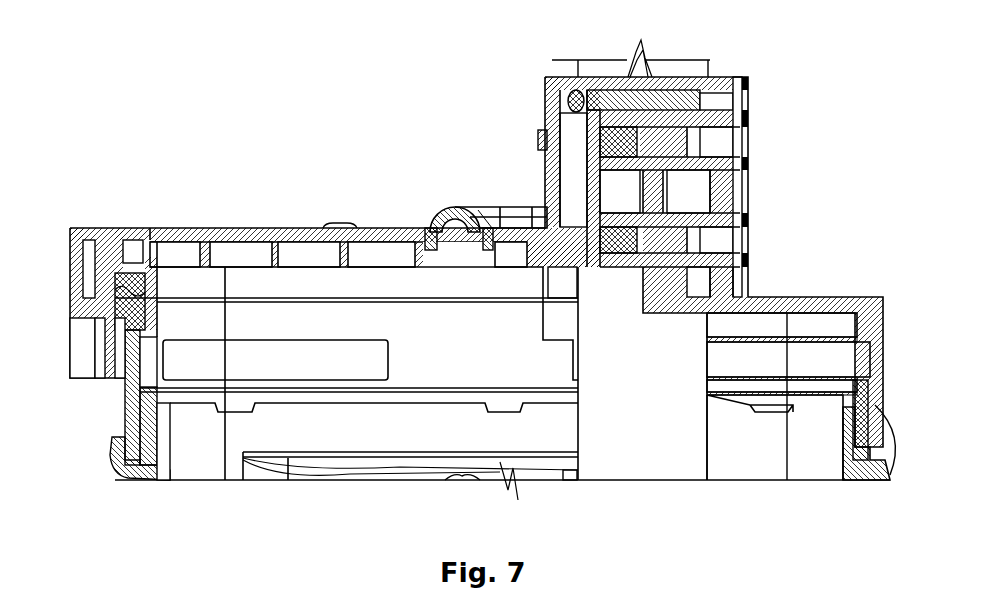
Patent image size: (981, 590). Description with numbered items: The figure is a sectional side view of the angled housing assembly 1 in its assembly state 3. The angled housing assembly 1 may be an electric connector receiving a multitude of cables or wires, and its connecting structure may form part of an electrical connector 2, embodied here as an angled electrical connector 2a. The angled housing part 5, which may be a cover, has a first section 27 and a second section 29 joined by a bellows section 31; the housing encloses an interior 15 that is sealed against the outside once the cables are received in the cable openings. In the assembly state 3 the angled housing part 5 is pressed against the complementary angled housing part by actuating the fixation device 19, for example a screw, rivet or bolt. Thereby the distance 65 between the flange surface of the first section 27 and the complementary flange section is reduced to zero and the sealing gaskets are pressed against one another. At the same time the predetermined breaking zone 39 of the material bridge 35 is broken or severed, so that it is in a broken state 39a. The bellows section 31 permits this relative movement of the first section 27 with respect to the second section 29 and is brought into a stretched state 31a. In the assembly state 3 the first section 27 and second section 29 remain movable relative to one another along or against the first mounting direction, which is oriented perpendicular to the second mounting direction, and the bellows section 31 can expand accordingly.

The angled housing assembly 1 is at (461, 256).
The electrical connector 2 is at (461, 256).
The angled electrical connector 2a is at (461, 256).
The assembly state 3 is at (461, 256).
The angled housing part 5 is at (247, 240).
The interior 15 is at (242, 318).
The fixation device 19 is at (687, 82).
The first section 27 is at (568, 140).
The second section 29 is at (172, 240).
The bellows section 31 is at (483, 181).
The stretched state 31a is at (483, 205).
The material bridge 35 is at (457, 254).
The predetermined breaking zone 39 is at (389, 213).
The broken state 39a is at (448, 237).
The distance 65 is at (648, 68).